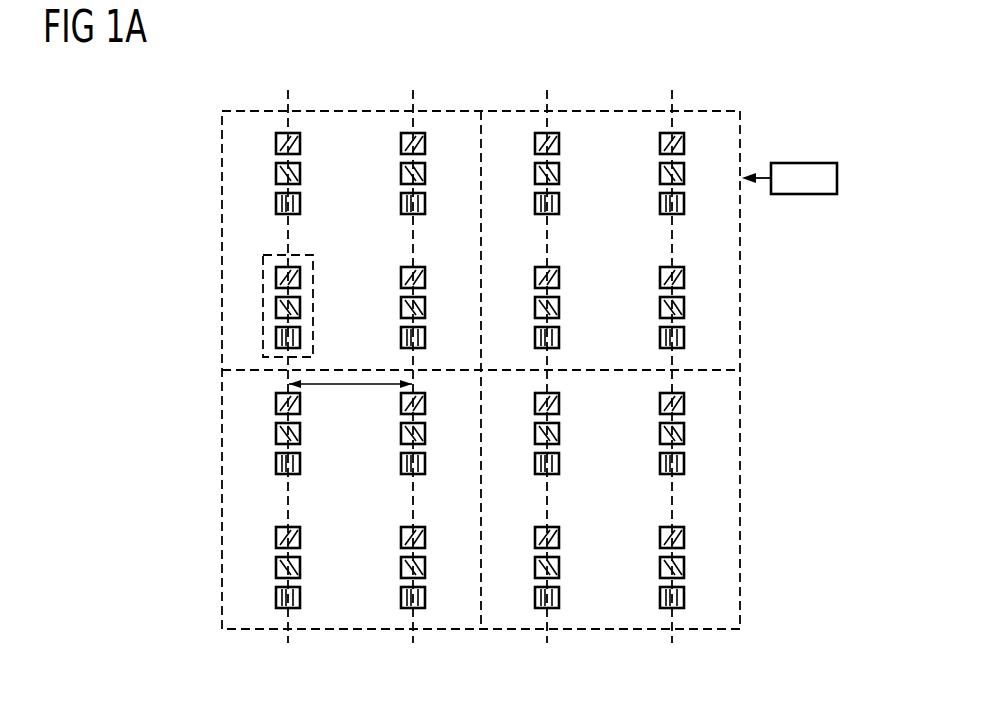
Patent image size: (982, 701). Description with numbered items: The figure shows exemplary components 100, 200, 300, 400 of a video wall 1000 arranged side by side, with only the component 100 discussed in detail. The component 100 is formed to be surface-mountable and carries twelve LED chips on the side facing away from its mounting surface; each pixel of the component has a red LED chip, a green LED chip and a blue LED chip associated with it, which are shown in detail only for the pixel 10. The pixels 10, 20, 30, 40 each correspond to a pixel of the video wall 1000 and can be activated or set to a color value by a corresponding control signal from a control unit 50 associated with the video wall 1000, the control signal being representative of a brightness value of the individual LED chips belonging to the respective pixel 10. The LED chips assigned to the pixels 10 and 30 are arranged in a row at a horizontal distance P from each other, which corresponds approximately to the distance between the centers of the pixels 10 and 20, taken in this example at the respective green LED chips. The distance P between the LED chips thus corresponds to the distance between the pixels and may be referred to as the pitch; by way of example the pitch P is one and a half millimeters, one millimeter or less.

The video wall 1000 is at (750, 85).
The component 100 is at (345, 111).
The component 200 is at (611, 111).
The component 300 is at (347, 631).
The component 400 is at (612, 631).
The pixel 10 is at (263, 260).
The pixel 20 is at (266, 142).
The pixel 30 is at (440, 300).
The pixel 40 is at (440, 176).
The control unit 50 is at (789, 163).
The pitch P is at (355, 387).